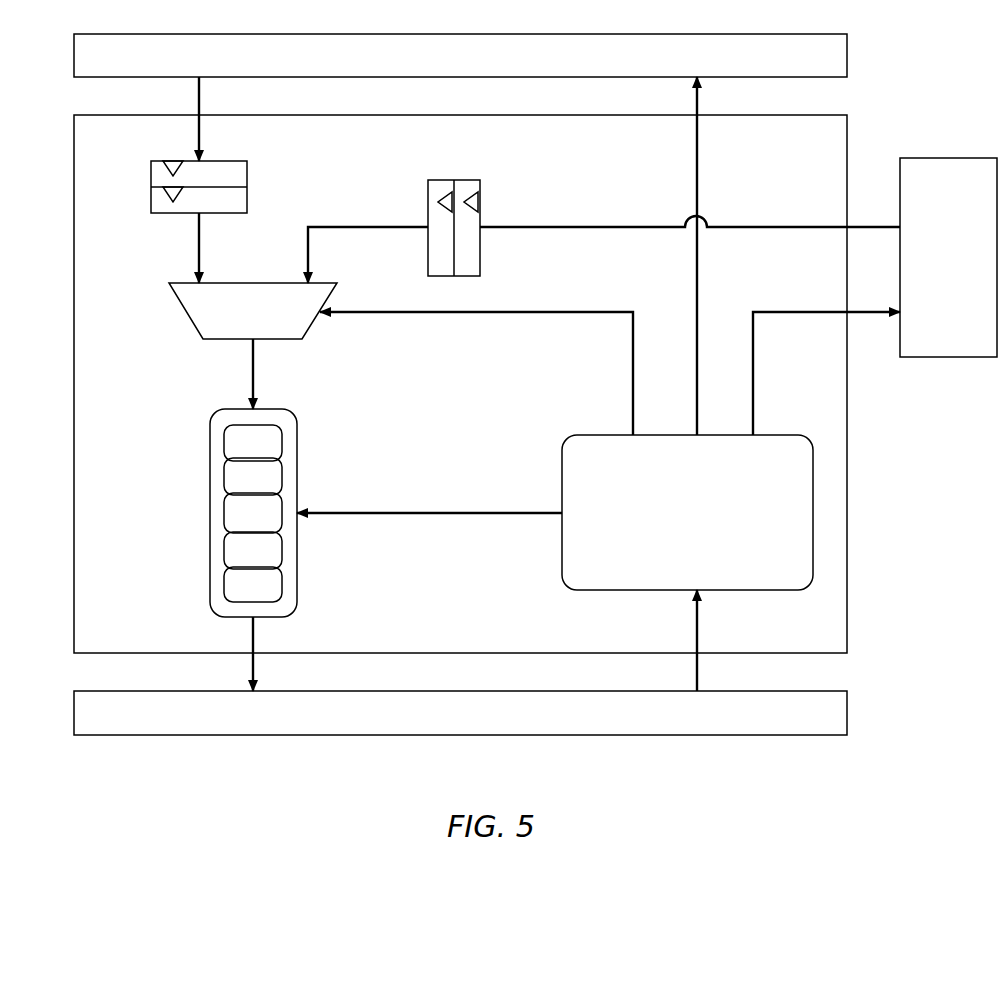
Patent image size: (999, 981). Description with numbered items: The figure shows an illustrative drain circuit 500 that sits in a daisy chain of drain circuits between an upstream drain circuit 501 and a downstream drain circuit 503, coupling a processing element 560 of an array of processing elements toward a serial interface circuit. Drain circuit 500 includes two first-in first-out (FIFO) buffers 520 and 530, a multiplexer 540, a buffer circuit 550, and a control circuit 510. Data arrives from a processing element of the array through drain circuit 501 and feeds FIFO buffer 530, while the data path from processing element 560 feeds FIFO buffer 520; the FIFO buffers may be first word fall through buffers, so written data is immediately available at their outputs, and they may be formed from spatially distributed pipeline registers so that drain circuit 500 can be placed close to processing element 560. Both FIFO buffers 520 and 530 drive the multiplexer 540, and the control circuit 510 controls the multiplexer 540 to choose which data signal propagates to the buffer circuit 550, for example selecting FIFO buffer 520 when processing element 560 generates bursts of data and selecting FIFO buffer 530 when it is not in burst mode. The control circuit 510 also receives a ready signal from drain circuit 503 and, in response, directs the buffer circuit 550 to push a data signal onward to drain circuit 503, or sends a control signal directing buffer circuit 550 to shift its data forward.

The drain circuit 500 is at (785, 113).
The drain circuit 501 is at (460, 55).
The drain circuit 503 is at (460, 713).
The control circuit 510 is at (687, 512).
The first-in first-out (FIFO) buffer 520 is at (455, 180).
The first-in first-out (FIFO) buffer 530 is at (151, 187).
The multiplexer 540 is at (253, 311).
The buffer circuit 550 is at (209, 513).
The processing element 560 is at (948, 257).